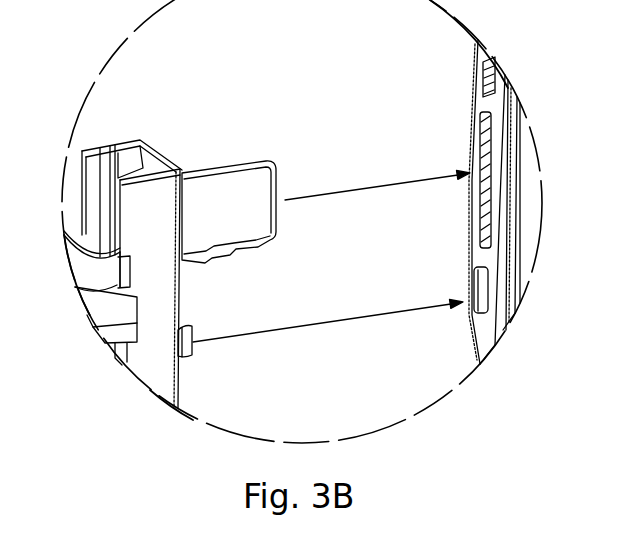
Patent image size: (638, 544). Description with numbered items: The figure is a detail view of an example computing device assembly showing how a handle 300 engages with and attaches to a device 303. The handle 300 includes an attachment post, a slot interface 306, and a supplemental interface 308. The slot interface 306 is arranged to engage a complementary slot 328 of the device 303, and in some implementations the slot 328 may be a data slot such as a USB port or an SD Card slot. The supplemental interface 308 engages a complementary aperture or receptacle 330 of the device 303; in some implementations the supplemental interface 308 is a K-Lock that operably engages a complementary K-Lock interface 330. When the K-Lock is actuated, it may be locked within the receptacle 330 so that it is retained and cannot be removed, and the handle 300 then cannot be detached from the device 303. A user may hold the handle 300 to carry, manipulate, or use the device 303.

The handle 300 is at (150, 80).
The device 303 is at (465, 60).
The slot interface 306 is at (204, 190).
The supplemental interface 308 is at (190, 341).
The slot 328 is at (486, 152).
The receptacle 330 is at (474, 282).